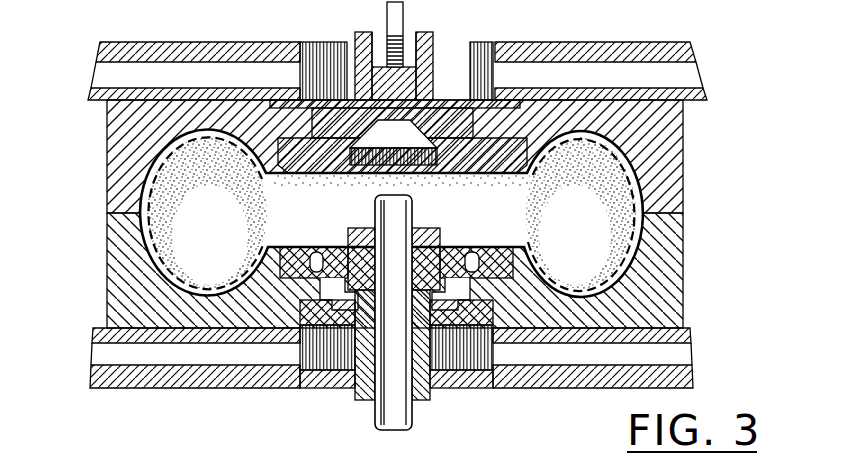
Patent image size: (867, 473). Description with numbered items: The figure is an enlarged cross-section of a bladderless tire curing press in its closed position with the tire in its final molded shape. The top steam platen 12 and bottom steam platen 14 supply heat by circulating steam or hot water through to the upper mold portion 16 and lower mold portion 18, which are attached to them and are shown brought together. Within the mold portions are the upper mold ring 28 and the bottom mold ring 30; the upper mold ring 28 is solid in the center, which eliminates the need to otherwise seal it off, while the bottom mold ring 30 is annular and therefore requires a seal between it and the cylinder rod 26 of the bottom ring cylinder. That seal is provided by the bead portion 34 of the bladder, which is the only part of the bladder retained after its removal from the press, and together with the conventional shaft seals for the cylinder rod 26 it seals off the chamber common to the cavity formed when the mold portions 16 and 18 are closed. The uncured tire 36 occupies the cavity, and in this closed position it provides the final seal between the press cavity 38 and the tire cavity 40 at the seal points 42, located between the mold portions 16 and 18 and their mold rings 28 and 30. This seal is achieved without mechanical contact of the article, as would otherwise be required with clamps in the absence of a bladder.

The top steam platen 12 is at (186, 75).
The bottom steam platen 14 is at (187, 355).
The upper mold portion 16 is at (107, 122).
The lower mold portion 18 is at (115, 240).
The cylinder rod 26 is at (383, 403).
The upper mold ring 28 is at (262, 146).
The bottom mold ring 30 is at (513, 282).
The bead portion of the bladder 34 is at (264, 267).
The uncured tire 36 is at (153, 236).
The press cavity 38 is at (420, 185).
The tire cavity 40 is at (572, 208).
The seal points 42 is at (256, 140).